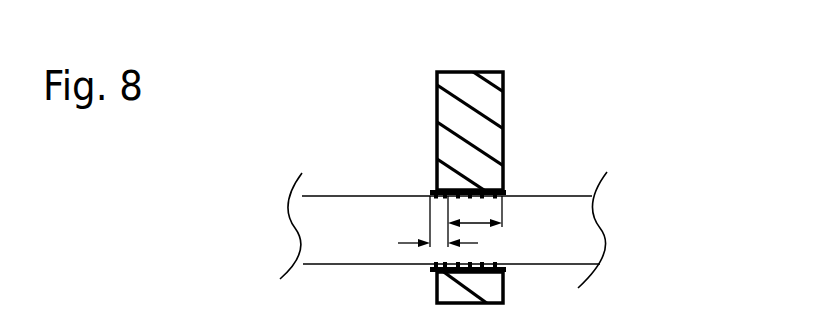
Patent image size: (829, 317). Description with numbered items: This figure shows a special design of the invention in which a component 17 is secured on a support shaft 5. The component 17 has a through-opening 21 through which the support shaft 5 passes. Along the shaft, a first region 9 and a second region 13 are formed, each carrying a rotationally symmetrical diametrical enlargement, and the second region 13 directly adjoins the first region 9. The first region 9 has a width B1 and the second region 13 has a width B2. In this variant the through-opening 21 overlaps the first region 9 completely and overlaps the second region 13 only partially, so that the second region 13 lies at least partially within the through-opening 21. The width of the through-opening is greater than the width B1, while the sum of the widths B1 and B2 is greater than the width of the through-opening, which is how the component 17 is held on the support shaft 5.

The support shaft 5 is at (567, 220).
The first region 9 is at (480, 187).
The second region 13 is at (428, 180).
The secured component 17 is at (483, 90).
The through-opening 21 is at (398, 5).
The width of the first region B1 is at (481, 227).
The width of the second region B2 is at (421, 227).